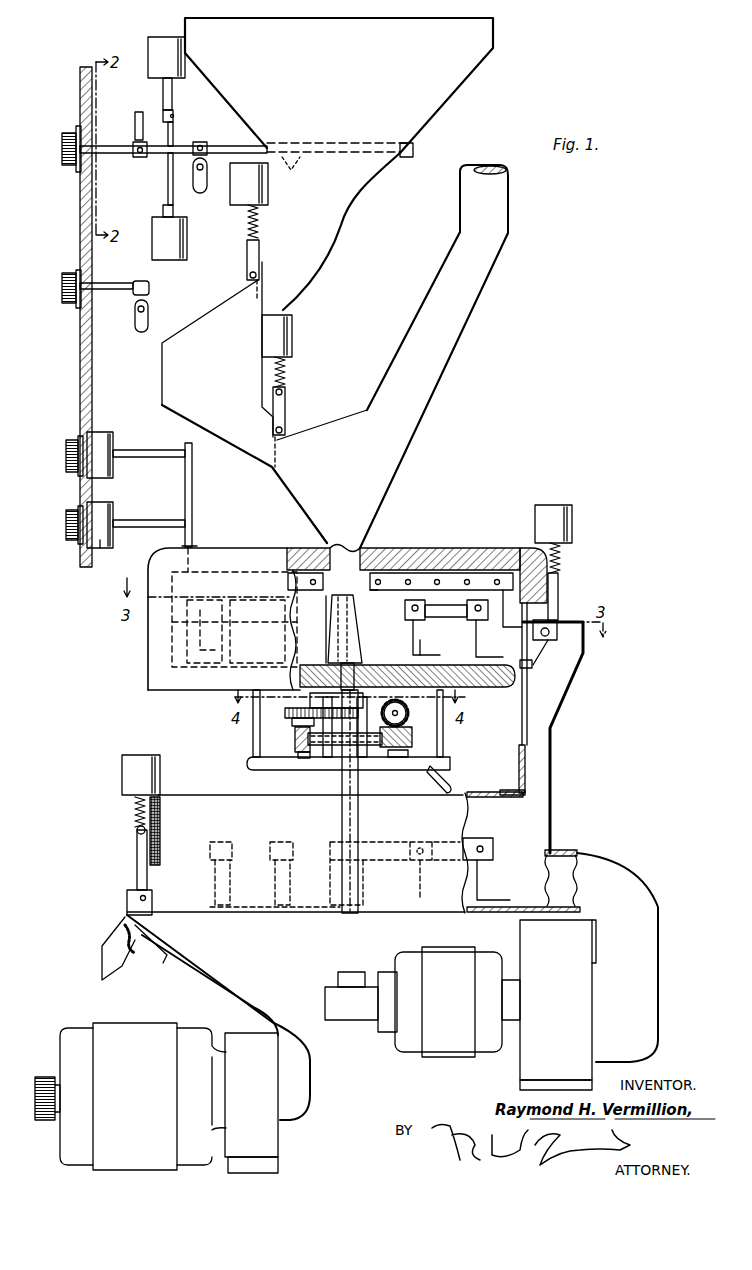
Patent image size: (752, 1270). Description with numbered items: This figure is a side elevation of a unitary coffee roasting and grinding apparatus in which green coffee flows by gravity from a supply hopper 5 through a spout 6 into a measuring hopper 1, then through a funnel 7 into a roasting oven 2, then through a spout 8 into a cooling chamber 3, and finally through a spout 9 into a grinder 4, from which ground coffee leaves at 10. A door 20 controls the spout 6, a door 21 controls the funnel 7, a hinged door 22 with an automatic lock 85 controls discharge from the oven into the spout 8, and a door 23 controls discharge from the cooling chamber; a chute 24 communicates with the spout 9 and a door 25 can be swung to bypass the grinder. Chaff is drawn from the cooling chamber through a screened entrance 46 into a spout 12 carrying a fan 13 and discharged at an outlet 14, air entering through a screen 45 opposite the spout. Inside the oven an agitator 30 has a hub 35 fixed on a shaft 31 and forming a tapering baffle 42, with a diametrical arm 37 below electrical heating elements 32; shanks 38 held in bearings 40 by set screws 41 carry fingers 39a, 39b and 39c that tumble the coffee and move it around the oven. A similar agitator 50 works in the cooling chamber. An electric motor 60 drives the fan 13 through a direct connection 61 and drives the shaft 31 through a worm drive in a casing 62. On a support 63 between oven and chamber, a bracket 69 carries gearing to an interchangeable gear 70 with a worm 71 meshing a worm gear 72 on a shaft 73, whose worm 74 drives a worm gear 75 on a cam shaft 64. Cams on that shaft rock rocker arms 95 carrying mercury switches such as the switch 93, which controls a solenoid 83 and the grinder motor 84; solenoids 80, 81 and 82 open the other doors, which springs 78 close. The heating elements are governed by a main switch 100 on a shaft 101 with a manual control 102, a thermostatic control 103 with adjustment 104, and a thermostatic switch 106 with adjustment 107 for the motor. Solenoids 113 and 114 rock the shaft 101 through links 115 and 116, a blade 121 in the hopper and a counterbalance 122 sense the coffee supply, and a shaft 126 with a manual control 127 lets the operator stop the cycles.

The measuring hopper 1 is at (181, 347).
The roasting oven 2 is at (160, 646).
The cooling chamber 3 is at (190, 802).
The grinder 4 is at (238, 1048).
The supply hopper 5 is at (440, 85).
The spout 6 is at (283, 290).
The funnel 7 is at (322, 508).
The spout 8 is at (531, 757).
The spout 9 is at (241, 987).
The ground coffee discharge 10 is at (271, 1168).
The spout 12 is at (657, 873).
The fan 13 is at (533, 1038).
The outlet 14 is at (596, 1086).
The door 20 is at (255, 298).
The door 21 is at (263, 468).
The door 22 is at (540, 634).
The door 23 is at (150, 906).
The chute 24 is at (113, 950).
The door 25 is at (130, 944).
The agitator 30 is at (377, 589).
The shaft 31 is at (302, 674).
The electrical heating elements 32 is at (309, 583).
The hub 35 is at (372, 598).
The diametrical arm 37 is at (446, 618).
The shanks 38 is at (422, 646).
The finger 39a is at (409, 638).
The finger 39b is at (229, 634).
The fingers 39c is at (492, 638).
The bearings 40 is at (432, 607).
The set screws 41 is at (414, 606).
The tapering baffle 42 is at (331, 645).
The screen 45 is at (160, 836).
The screen 46 is at (556, 866).
The agitator 50 is at (395, 833).
The electric motor 60 is at (442, 965).
The direct connection 61 is at (508, 1002).
The casing 62 is at (368, 1008).
The support 63 is at (257, 758).
The cam shaft 64 is at (398, 714).
The bracket 69 is at (318, 698).
The gear 70 is at (291, 715).
The worm 71 is at (296, 750).
The worm gear 72 is at (297, 734).
The shaft 73 is at (348, 740).
The worm 74 is at (400, 746).
The worm gear 75 is at (391, 706).
The springs 78 is at (262, 224).
The solenoid 80 is at (238, 190).
The solenoid 81 is at (296, 341).
The solenoid 82 is at (566, 524).
The solenoid 83 is at (128, 763).
The electric motor 84 is at (118, 1043).
The automatic lock 85 is at (524, 668).
The switch 93 is at (440, 776).
The rocker arms 95 is at (398, 758).
The switch 100 is at (202, 190).
The shaft 101 is at (105, 150).
The manual control 102 is at (64, 150).
The thermostatic control 103 is at (100, 436).
The manual adjustment 104 is at (67, 459).
The thermostatic switch 106 is at (106, 540).
The manual adjustment 107 is at (68, 537).
The solenoid 113 is at (173, 59).
The solenoid 114 is at (163, 239).
The link 115 is at (172, 136).
The link 116 is at (168, 187).
The blade 121 is at (294, 171).
The counterbalance 122 is at (136, 116).
The shaft 126 is at (105, 292).
The manual control 127 is at (63, 286).